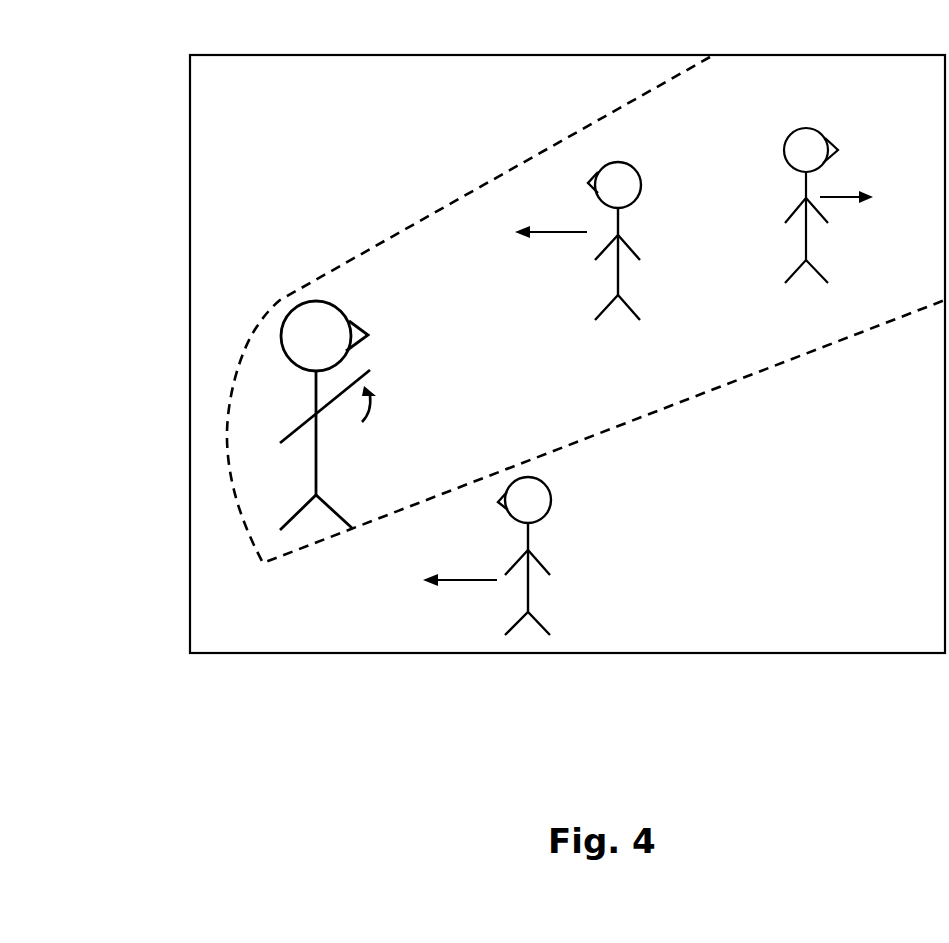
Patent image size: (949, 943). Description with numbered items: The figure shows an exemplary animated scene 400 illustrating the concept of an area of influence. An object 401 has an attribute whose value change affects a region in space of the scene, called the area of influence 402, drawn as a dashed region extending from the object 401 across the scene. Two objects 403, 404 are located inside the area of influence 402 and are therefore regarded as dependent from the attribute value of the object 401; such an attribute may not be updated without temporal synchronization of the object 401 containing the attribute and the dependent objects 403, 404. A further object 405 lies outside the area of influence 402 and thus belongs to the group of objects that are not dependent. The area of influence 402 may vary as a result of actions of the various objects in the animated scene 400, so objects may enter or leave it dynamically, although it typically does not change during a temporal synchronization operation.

The animated scene 400 is at (508, 354).
The object 401 is at (347, 415).
The area of influence 402 is at (586, 310).
The object 403 is at (617, 241).
The object 404 is at (790, 205).
The object 405 is at (528, 556).